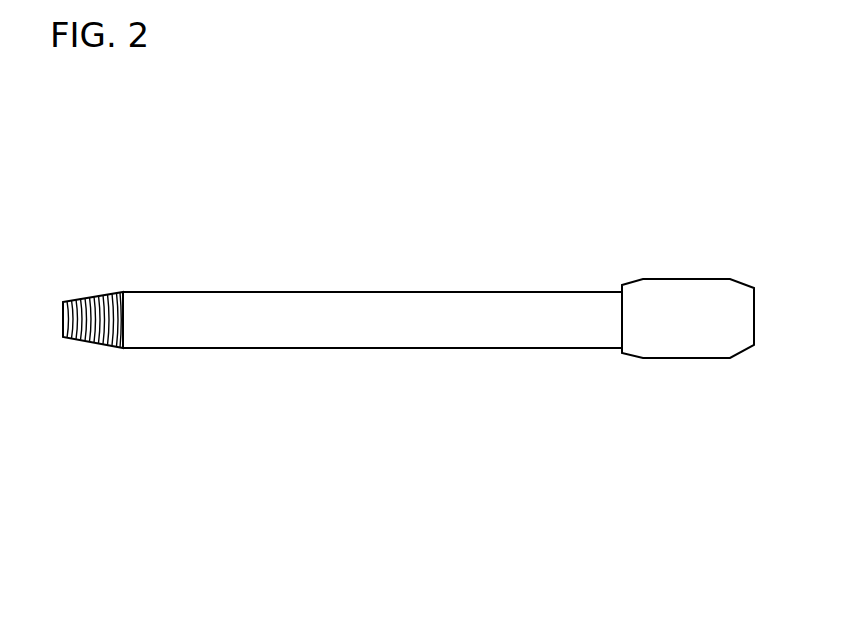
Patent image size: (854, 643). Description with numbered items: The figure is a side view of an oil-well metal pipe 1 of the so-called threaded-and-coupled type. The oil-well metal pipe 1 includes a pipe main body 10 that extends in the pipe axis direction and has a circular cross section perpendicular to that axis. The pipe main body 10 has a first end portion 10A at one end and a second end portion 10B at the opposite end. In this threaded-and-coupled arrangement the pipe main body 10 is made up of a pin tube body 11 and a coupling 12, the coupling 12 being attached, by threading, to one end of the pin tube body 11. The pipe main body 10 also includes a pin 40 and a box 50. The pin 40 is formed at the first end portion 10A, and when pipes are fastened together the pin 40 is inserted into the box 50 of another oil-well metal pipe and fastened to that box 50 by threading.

The oil-well metal pipe 1 is at (403, 97).
The pipe main body 10 is at (413, 275).
The first end portion 10A is at (92, 286).
The second end portion 10B is at (737, 276).
The pin tube body 11 is at (364, 298).
The coupling 12 is at (685, 298).
The pin 40 is at (93, 338).
The box 50 is at (737, 340).